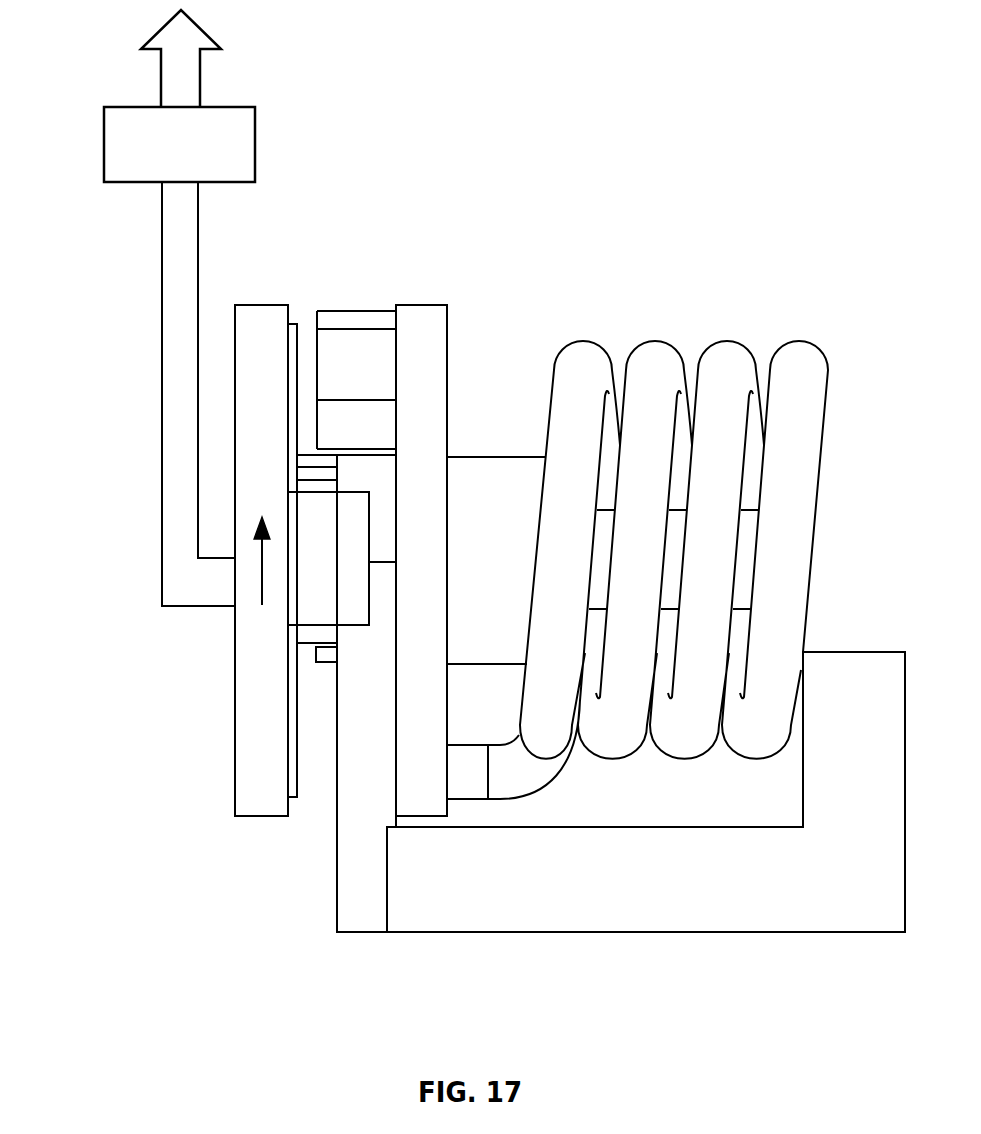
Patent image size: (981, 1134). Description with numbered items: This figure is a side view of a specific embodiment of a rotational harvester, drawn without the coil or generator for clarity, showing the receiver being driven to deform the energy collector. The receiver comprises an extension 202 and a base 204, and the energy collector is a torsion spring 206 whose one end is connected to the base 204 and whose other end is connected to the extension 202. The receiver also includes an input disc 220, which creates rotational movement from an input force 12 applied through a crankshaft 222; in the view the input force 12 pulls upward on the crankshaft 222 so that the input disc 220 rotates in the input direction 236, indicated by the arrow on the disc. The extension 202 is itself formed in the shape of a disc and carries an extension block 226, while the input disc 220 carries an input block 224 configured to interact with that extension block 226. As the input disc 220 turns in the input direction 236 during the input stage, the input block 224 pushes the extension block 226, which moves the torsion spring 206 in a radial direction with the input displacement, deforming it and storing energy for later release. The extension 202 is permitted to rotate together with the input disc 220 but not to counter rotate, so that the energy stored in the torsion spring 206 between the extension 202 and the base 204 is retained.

The input force 12 is at (104, 145).
The extension 202 is at (425, 368).
The base 204 is at (352, 920).
The torsion spring 206 is at (583, 348).
The input disc 220 is at (237, 473).
The crankshaft 222 is at (177, 543).
The input block 224 is at (323, 604).
The extension block 226 is at (346, 352).
The input direction 236 is at (258, 578).